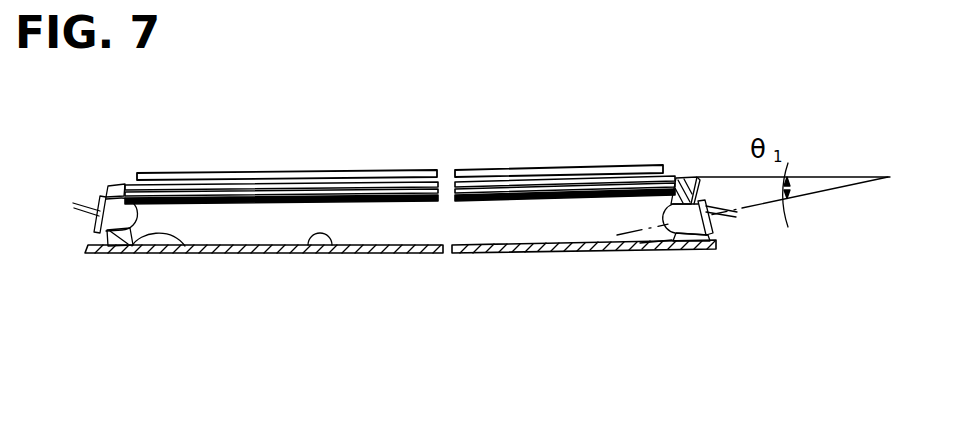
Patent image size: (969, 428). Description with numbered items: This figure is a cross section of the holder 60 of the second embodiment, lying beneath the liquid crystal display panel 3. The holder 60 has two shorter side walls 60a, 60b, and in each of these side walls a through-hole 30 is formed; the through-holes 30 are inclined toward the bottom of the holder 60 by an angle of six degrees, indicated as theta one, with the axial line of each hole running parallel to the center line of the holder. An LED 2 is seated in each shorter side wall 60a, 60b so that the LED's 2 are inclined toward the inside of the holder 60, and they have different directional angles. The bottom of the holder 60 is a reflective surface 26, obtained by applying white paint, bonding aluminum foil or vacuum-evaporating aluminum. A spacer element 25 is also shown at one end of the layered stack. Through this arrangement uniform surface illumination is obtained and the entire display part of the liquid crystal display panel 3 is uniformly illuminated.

The LED 2 is at (120, 240).
The liquid crystal display panel 3 is at (528, 168).
The spacer 25 is at (672, 177).
The reflective surface 26 is at (330, 246).
The through-hole 30 is at (185, 246).
The holder 60 is at (534, 252).
The shorter side wall 60a is at (117, 183).
The shorter side wall 60b is at (697, 178).